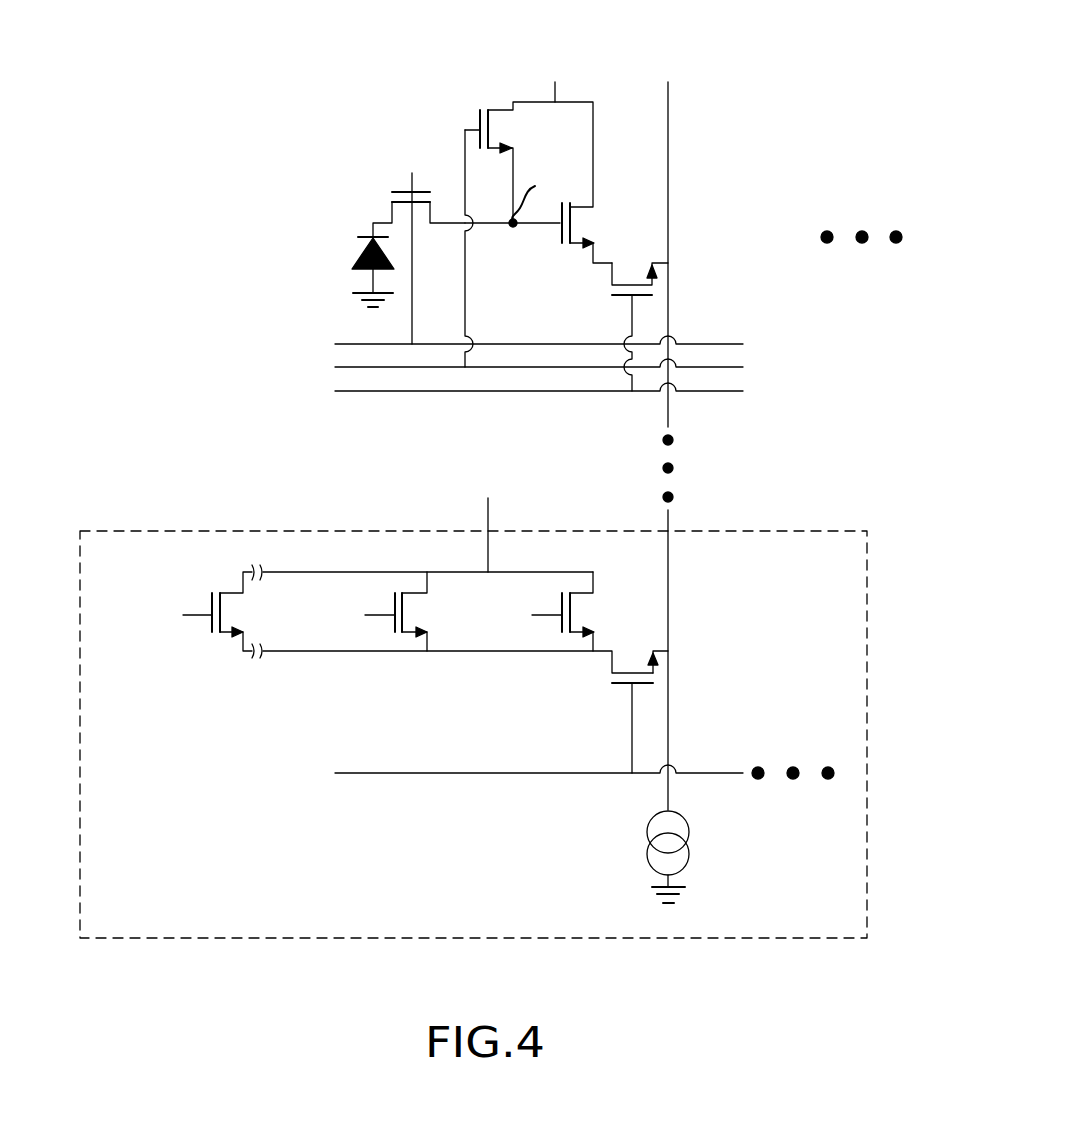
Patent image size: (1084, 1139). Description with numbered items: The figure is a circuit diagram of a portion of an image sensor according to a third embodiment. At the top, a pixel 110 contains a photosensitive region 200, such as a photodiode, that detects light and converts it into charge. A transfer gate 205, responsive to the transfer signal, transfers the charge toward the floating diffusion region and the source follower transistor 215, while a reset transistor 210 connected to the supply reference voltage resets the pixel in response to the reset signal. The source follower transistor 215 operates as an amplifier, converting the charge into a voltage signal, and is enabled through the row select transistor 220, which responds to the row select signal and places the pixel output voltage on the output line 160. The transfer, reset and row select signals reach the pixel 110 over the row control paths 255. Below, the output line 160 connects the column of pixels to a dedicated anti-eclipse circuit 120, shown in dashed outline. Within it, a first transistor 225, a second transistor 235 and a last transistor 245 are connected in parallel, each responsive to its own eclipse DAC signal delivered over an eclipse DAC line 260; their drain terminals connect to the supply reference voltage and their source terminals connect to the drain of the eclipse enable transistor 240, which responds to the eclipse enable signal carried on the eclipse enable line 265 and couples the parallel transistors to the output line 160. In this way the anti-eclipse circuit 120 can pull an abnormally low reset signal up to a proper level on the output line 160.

The pixel 110 is at (328, 132).
The photosensitive region 200 is at (365, 250).
The transfer gate 205 is at (418, 193).
The reset transistor 210 is at (480, 122).
The source follower transistor 215 is at (561, 228).
The row select transistor 220 is at (612, 296).
The output line 160 is at (668, 128).
The row control paths 255 is at (757, 335).
The anti-eclipse circuit 120 is at (867, 640).
The last transistor 245 is at (232, 592).
The second transistor 235 is at (410, 593).
The first transistor 225 is at (570, 593).
The eclipse DAC line 260 is at (197, 616).
The eclipse enable transistor 240 is at (624, 686).
The eclipse enable line 265 is at (492, 775).